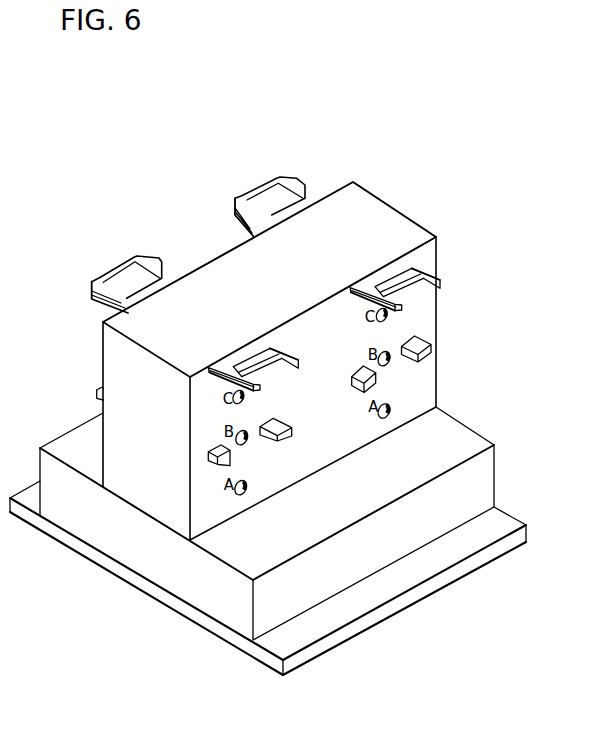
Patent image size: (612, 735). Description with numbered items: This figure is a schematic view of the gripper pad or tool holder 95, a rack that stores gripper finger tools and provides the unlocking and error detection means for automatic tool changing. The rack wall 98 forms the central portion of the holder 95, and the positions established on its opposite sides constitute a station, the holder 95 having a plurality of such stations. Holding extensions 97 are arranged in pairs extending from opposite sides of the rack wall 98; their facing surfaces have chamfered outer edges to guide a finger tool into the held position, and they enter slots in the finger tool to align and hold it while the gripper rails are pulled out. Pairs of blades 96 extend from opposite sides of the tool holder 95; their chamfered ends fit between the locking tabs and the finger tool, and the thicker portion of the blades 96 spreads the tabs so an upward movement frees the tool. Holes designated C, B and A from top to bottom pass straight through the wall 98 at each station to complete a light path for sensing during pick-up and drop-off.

The holder 95 is at (74, 368).
The blades 96 is at (135, 257).
The holding extensions 97 is at (93, 392).
The rack wall 98 is at (190, 440).